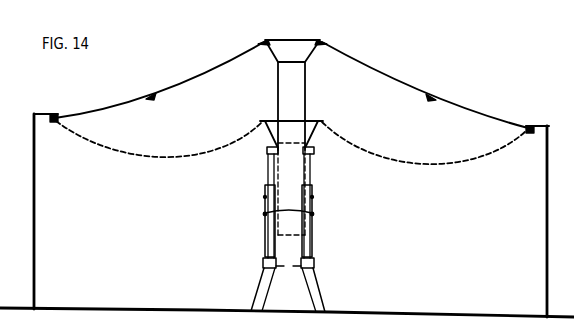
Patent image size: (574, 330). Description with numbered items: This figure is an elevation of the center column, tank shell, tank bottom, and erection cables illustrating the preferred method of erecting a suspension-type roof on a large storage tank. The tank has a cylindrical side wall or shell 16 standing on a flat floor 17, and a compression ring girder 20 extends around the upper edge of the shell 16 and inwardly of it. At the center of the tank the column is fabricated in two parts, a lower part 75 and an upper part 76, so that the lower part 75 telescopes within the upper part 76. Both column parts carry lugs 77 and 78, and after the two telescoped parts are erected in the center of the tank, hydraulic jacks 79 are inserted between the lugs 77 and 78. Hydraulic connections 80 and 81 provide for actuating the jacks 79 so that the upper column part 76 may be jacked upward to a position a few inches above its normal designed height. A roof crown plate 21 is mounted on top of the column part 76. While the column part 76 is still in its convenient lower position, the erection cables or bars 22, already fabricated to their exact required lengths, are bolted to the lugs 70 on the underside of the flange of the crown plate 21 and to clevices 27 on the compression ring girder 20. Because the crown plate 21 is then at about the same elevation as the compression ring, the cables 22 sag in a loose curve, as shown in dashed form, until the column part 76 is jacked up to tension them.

The shell 16 is at (59, 196).
The floor 17 is at (153, 310).
The compression ring girder 20 is at (51, 103).
The roof crown plate 21 is at (290, 39).
The erection cables 22 is at (176, 82).
The clevices 27 is at (85, 105).
The lugs 70 is at (260, 42).
The lower column part 75 is at (290, 190).
The upper column part 76 is at (295, 111).
The lugs 77 is at (264, 267).
The lugs 78 is at (262, 146).
The hydraulic jacks 79 is at (313, 213).
The hydraulic connections 80 is at (265, 214).
The hydraulic connections 81 is at (265, 197).